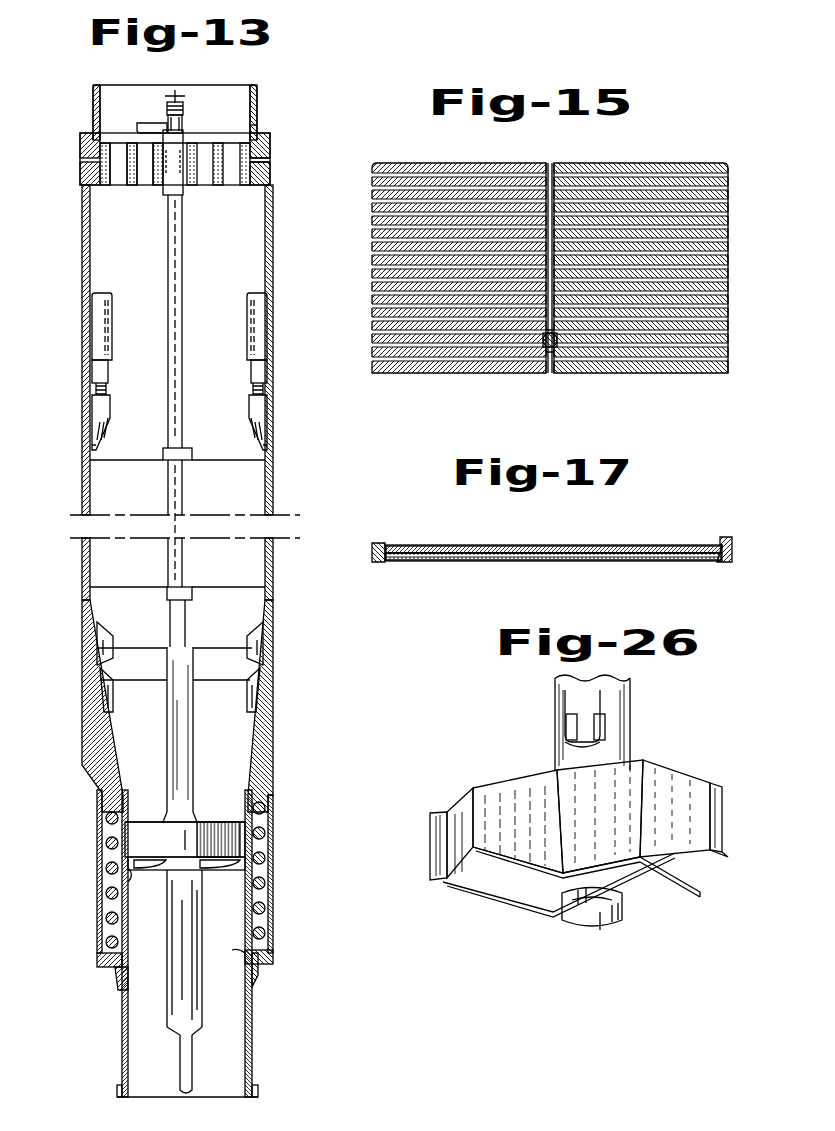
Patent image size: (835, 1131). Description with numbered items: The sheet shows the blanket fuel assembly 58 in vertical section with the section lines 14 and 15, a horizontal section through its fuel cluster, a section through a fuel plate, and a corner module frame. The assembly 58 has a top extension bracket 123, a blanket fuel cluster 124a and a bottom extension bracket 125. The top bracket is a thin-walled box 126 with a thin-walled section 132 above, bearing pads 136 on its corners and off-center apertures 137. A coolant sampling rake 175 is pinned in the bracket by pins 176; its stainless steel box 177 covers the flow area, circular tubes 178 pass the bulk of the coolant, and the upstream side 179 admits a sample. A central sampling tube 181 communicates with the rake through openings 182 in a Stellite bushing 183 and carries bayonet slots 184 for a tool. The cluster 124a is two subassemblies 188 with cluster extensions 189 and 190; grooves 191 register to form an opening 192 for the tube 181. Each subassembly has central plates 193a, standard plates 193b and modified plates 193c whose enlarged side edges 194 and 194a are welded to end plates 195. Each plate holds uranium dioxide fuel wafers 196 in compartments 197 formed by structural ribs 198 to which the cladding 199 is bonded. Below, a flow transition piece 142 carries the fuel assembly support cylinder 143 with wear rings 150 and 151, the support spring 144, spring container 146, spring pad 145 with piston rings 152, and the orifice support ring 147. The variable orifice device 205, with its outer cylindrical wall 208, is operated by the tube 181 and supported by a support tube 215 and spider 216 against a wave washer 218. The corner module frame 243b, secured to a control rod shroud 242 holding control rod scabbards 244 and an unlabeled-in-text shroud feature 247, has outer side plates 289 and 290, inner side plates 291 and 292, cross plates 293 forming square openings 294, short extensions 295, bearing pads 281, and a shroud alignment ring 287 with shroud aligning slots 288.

In FIG. 13, the section line 14- 14 is at (50, 85).
In FIG. 13, the section line 15- 15 is at (43, 476).
In FIG. 13, the blanket fuel assembly 58 is at (305, 79).
In FIG. 15, the blanket fuel assembly 58 is at (683, 136).
In FIG. 13, the top extension bracket 123 is at (83, 280).
In FIG. 13, the blanket fuel cluster 124a is at (89, 580).
In FIG. 15, the blanket fuel cluster 124a is at (680, 157).
In FIG. 13, the bottom extension bracket 125 is at (272, 748).
In FIG. 13, the thin-walled box 126 is at (92, 322).
In FIG. 13, the thin-walled section 132 is at (257, 110).
In FIG. 13, the bearing pads 136 is at (82, 210).
In FIG. 13, the off-center apertures 137 is at (257, 126).
In FIG. 13, the flow transition piece 142 is at (95, 740).
In FIG. 13, the fuel assembly support cylinder 143 is at (252, 1022).
In FIG. 13, the fuel assembly support spring 144 is at (104, 846).
In FIG. 13, the spring pad 145 is at (115, 970).
In FIG. 13, the spring container 146 is at (274, 890).
In FIG. 13, the orifice support ring 147 is at (245, 862).
In FIG. 13, the wear ring 150 is at (256, 1092).
In FIG. 13, the wear ring 151 is at (258, 978).
In FIG. 13, the piston rings 152 is at (245, 953).
In FIG. 13, the coolant sampling rake 175 is at (119, 124).
In FIG. 13, the pins 176 is at (270, 160).
In FIG. 13, the stainless steel box 177 is at (82, 180).
In FIG. 13, the circular tubes 178 is at (120, 175).
In FIG. 13, the upstream side 179 is at (130, 175).
In FIG. 13, the sampling tube 181 is at (178, 240).
In FIG. 15, the sampling tube 181 is at (547, 350).
In FIG. 13, the openings 182 is at (180, 140).
In FIG. 13, the Stellite bushing 183 is at (185, 190).
In FIG. 13, the bayonet slots 184 is at (183, 108).
In FIG. 13, the fuel subassembly 188 is at (235, 478).
In FIG. 15, the fuel subassembly 188 is at (416, 158).
In FIG. 13, the cluster extension 189 is at (267, 440).
In FIG. 13, the cluster extension 190 is at (272, 620).
In FIG. 15, the groove 191 is at (556, 355).
In FIG. 15, the opening 192 is at (545, 347).
In FIG. 15, the central plates 193a is at (370, 370).
In FIG. 17, the central plates 193a is at (451, 576).
In FIG. 15, the standard plates 193b is at (370, 234).
In FIG. 17, the standard plates 193b is at (470, 565).
In FIG. 15, the modified plates 193c is at (370, 230).
In FIG. 17, the modified plates 193c is at (440, 615).
In FIG. 15, the enlarged side edge 194 is at (728, 183).
In FIG. 17, the enlarged side edge 194 is at (375, 543).
In FIG. 15, the enlarged side edge 194a is at (546, 178).
In FIG. 17, the enlarged side edge 194a is at (722, 537).
In FIG. 15, the end plates 195 is at (488, 163).
In FIG. 17, the uranium dioxide fuel wafers 196 is at (465, 545).
In FIG. 13, the compartments 197 is at (152, 123).
In FIG. 17, the compartments 197 is at (692, 562).
In FIG. 17, the structural ribs 198 is at (558, 562).
In FIG. 17, the cladding 199 is at (584, 545).
In FIG. 13, the variable orifice device 205 is at (148, 812).
In FIG. 13, the outer cylindrical wall 208 is at (225, 838).
In FIG. 13, the support tube 215 is at (183, 725).
In FIG. 13, the spider 216 is at (230, 652).
In FIG. 13, the wave washer 218 is at (128, 876).
In FIG. 26, the control rod shroud 242 is at (650, 693).
In FIG. 26, the corner module frame 243b is at (702, 746).
In FIG. 26, the control rod scabbards 244 is at (566, 720).
In FIG. 26, the slot 247 is at (630, 712).
In FIG. 26, the bearing pads 281 is at (660, 890).
In FIG. 26, the shroud alignment ring 287 is at (622, 908).
In FIG. 26, the shroud aligning slots 288 is at (612, 925).
In FIG. 26, the outer side plate 289 is at (510, 897).
In FIG. 26, the outer side plate 290 is at (690, 863).
In FIG. 26, the inner side plate 291 is at (540, 760).
In FIG. 26, the inner side plate 292 is at (622, 775).
In FIG. 26, the cross plates 293 is at (545, 880).
In FIG. 26, the square openings 294 is at (485, 884).
In FIG. 26, the short extension 295 is at (450, 812).